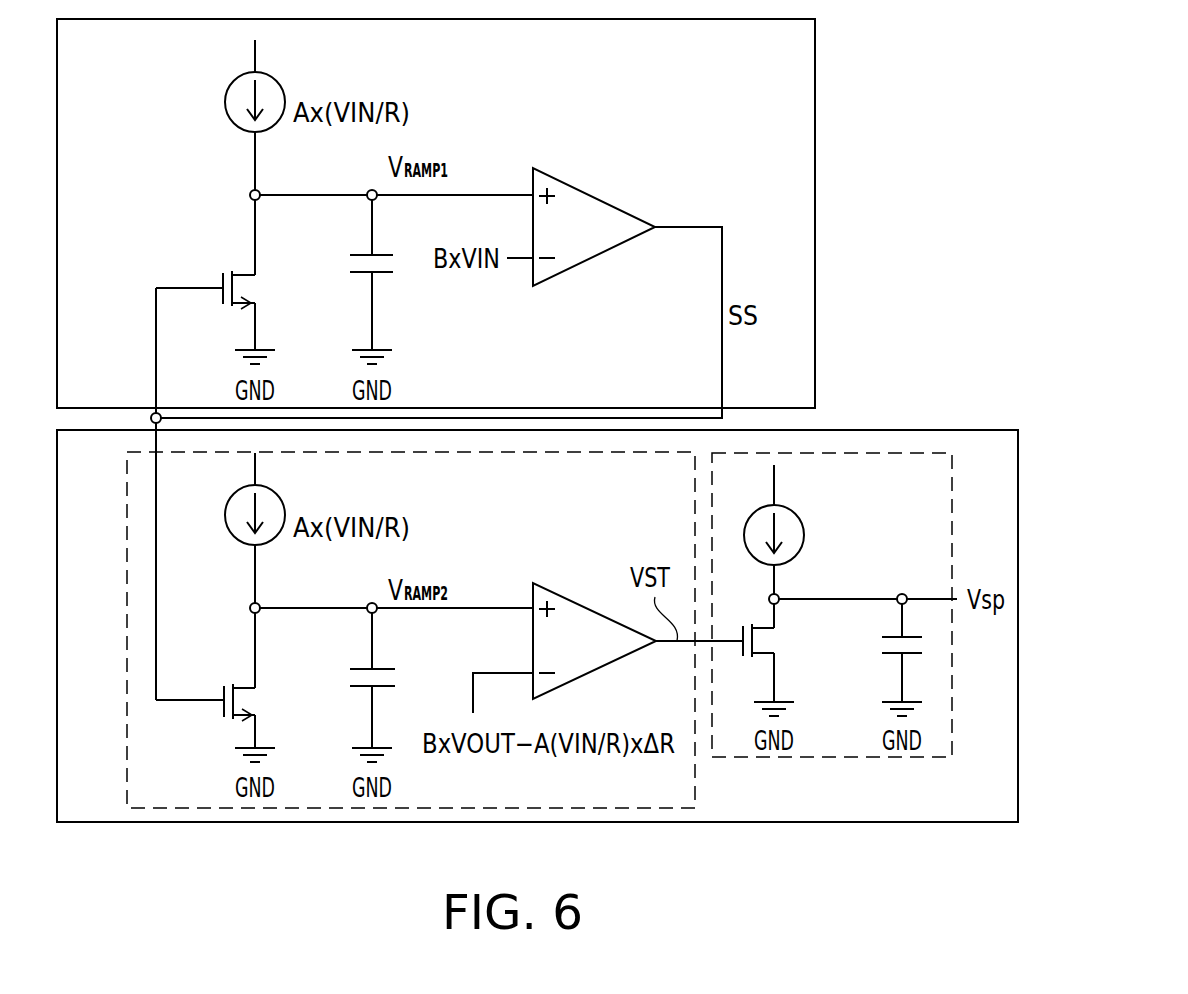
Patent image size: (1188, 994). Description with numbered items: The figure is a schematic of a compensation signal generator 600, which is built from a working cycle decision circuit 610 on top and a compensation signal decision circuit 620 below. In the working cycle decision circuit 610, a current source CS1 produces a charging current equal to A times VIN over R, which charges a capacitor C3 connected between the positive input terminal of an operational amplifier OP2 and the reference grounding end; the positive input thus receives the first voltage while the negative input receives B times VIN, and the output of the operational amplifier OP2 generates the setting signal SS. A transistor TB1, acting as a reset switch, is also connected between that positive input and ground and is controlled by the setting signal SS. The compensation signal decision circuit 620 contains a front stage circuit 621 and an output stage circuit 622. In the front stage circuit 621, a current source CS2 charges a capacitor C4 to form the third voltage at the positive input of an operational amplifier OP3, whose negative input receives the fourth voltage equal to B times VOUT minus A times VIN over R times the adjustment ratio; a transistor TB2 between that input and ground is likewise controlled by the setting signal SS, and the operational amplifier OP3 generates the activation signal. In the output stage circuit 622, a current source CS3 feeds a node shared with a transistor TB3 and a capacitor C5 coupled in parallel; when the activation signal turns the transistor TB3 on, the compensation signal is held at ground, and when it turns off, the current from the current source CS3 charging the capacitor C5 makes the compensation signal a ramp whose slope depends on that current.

The compensation signal generator 600 is at (1148, 812).
The working cycle decision circuit 610 is at (815, 54).
The compensation signal decision circuit 620 is at (1018, 483).
The front stage circuit 621 is at (402, 808).
The output stage circuit 622 is at (810, 757).
The current source CS1 is at (280, 80).
The current source CS2 is at (280, 493).
The current source CS3 is at (797, 512).
The operational amplifier OP2 is at (595, 195).
The operational amplifier OP3 is at (585, 605).
The transistor TB1 is at (223, 275).
The transistor TB2 is at (226, 680).
The transistor TB3 is at (779, 653).
The capacitor C3 is at (353, 275).
The capacitor C4 is at (355, 680).
The capacitor C5 is at (881, 653).